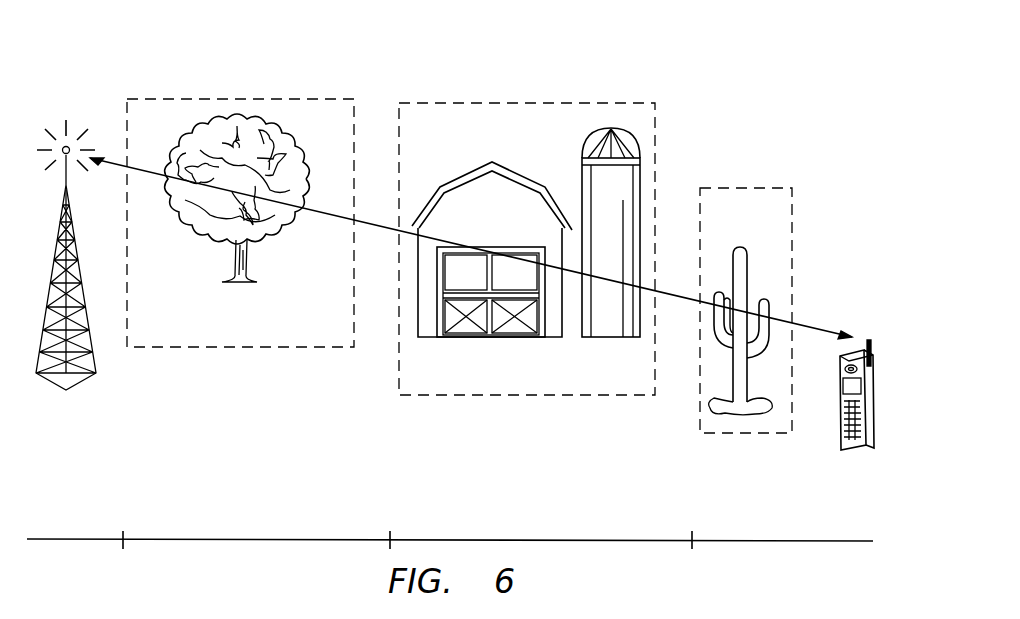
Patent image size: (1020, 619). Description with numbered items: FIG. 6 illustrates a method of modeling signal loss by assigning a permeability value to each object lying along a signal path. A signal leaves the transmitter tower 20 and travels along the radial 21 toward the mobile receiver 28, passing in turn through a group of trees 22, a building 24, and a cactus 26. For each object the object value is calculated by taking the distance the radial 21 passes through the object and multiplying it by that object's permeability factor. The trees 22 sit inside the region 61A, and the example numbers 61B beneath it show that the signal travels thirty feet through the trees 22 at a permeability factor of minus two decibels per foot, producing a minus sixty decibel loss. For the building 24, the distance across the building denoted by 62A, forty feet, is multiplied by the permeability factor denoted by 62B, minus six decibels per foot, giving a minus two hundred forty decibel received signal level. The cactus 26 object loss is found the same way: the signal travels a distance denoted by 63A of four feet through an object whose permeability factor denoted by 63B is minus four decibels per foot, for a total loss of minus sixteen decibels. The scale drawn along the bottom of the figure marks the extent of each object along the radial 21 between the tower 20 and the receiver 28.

The transmitter tower 20 is at (80, 383).
The radial 21 is at (97, 165).
The group of trees 22 is at (236, 288).
The building 24 is at (516, 340).
The cactus 26 is at (744, 247).
The mobile receiver 28 is at (866, 346).
The tree region 61A is at (228, 99).
The example numbers for the trees 61B is at (221, 406).
The distance across the building 62A is at (538, 103).
The permeability factor for the building 62B is at (537, 453).
The distance through the cactus object 63A is at (746, 188).
The permeability factor for the cactus 63B is at (757, 490).